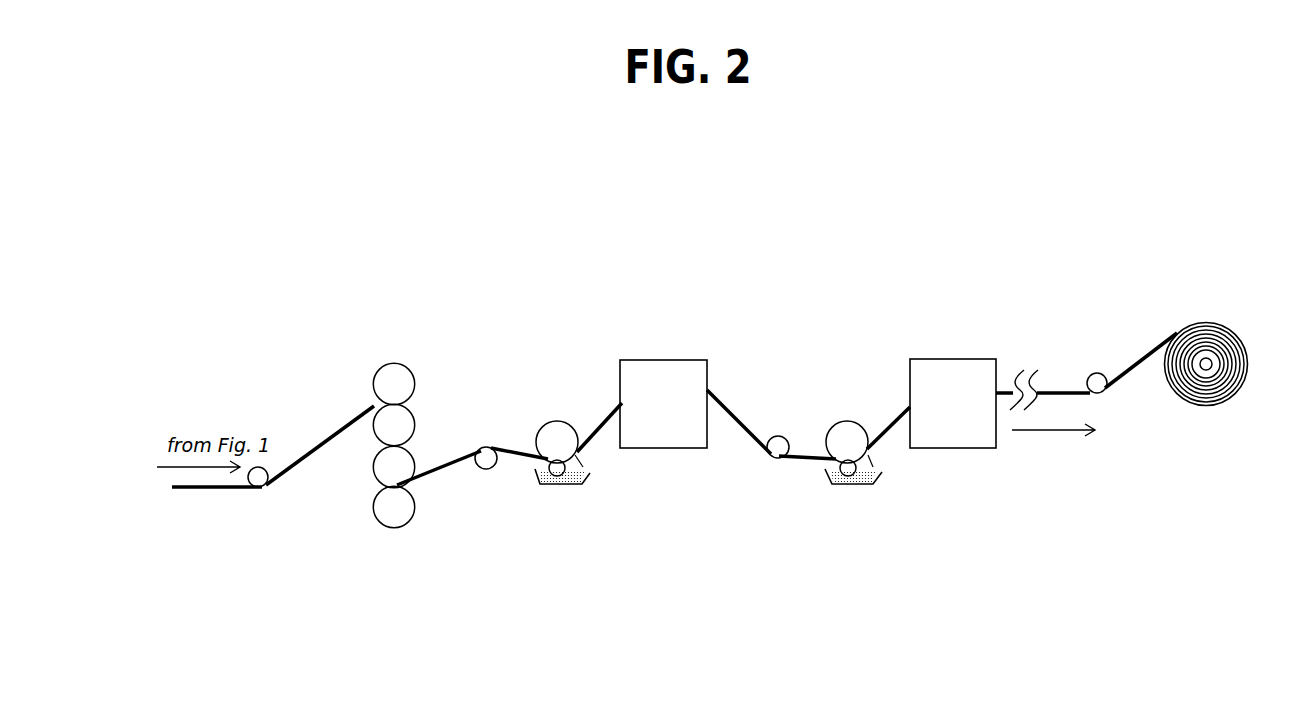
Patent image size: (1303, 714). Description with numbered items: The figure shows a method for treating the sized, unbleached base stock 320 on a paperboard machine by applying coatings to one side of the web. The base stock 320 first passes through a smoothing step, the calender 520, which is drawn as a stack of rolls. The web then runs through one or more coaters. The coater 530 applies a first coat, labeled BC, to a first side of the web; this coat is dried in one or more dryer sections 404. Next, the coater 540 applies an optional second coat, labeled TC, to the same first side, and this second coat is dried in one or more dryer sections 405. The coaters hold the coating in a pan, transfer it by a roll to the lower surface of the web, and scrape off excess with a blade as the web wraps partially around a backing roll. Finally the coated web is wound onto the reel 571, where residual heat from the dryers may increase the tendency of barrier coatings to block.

The base stock 320 is at (222, 488).
The calender 520 is at (381, 375).
The coater 530 is at (554, 422).
The dryer section 404 is at (682, 401).
The coater 540 is at (847, 422).
The dryer section 405 is at (935, 400).
The reel 571 is at (1178, 327).